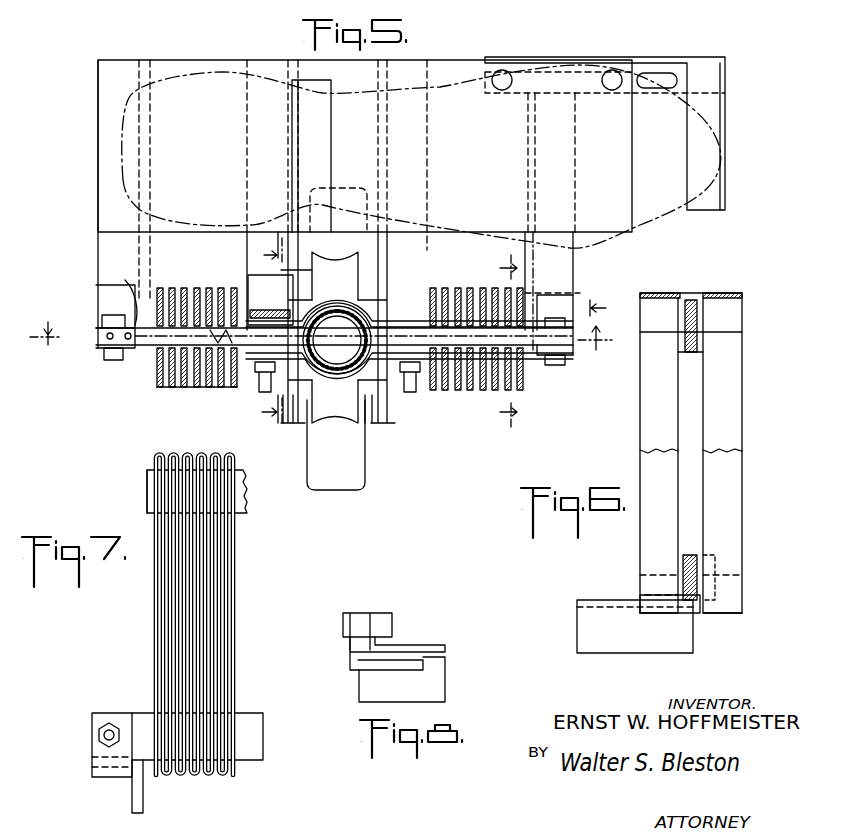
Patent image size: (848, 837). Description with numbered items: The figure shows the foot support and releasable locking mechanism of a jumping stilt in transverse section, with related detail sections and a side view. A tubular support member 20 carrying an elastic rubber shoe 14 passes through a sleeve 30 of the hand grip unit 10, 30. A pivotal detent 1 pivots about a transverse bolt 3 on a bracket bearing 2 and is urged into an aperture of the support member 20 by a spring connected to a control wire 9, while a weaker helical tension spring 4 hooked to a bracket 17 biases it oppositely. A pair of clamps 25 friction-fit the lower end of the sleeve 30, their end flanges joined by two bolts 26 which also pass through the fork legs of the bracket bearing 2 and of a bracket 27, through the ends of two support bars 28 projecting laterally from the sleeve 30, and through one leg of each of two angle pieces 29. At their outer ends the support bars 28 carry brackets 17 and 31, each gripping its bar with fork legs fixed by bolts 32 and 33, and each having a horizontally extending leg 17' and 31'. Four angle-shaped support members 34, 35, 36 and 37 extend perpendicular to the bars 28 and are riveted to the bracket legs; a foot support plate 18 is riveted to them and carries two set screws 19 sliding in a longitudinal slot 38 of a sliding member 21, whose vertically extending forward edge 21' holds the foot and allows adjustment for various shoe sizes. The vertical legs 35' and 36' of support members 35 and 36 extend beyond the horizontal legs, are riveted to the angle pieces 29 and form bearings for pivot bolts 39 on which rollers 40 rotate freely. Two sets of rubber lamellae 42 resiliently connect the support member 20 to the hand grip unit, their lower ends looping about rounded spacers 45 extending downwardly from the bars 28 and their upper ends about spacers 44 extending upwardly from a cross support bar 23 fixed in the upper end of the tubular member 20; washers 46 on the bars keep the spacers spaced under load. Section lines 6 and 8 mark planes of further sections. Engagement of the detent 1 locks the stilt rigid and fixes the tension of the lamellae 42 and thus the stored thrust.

In FIG. 5, the pivotal detent 1 is at (313, 338).
In FIG. 5, the bracket bearing 2 is at (250, 358).
In FIG. 5, the transverse bolt 3 is at (272, 310).
In FIG. 5, the helical tension spring 4 is at (208, 283).
In FIG. 5, the section line 6 is at (501, 344).
In FIG. 5, the section line 8 is at (604, 309).
In FIG. 5, the control wire 9 is at (321, 346).
In FIG. 5, the hand grip unit 10 is at (259, 333).
In FIG. 5, the elastic shoe 14 is at (355, 475).
In FIG. 5, the bracket 17 is at (98, 353).
In FIG. 7, the bracket 17 is at (84, 750).
In FIG. 5, the horizontally extending leg 17' is at (97, 306).
In FIG. 5, the foot support plate 18 is at (614, 197).
In FIG. 5, the set screws 19 is at (612, 72).
In FIG. 5, the tubular support member 20 is at (334, 370).
In FIG. 5, the sliding member 21 is at (605, 117).
In FIG. 5, the vertically extending forward edge 21' is at (746, 136).
In FIG. 7, the cross support bar 23 is at (240, 510).
In FIG. 5, the clamps 25 is at (365, 308).
In FIG. 5, the bolts 26 is at (334, 384).
In FIG. 5, the bracket 27 is at (410, 308).
In FIG. 5, the support bars 28 is at (572, 344).
In FIG. 6, the support bars 28 is at (692, 300).
In FIG. 7, the support bars 28 is at (263, 733).
In FIG. 5, the angle pieces 29 is at (283, 426).
In FIG. 5, the sleeve 30 is at (330, 310).
In FIG. 5, the bracket 31 is at (552, 371).
In FIG. 6, the bracket 31 is at (689, 624).
In FIG. 5, the horizontally extending leg 31' is at (582, 302).
In FIG. 6, the horizontally extending leg 31' is at (665, 577).
In FIG. 8, the horizontally extending leg 31' is at (384, 660).
In FIG. 5, the bolt 32 is at (113, 362).
In FIG. 7, the bolt 32 is at (109, 722).
In FIG. 5, the bolt 33 is at (566, 367).
In FIG. 8, the bolt 33 is at (395, 628).
In FIG. 5, the foot support plate support member 34 is at (100, 248).
In FIG. 7, the foot support plate support member 34 is at (132, 797).
In FIG. 5, the foot support plate support member 35 is at (284, 195).
In FIG. 5, the vertical leg 35' is at (293, 264).
In FIG. 5, the foot support plate support member 36 is at (409, 241).
In FIG. 5, the vertical leg 36' is at (381, 430).
In FIG. 5, the foot support plate support member 37 is at (565, 263).
In FIG. 6, the foot support plate support member 37 is at (620, 640).
In FIG. 8, the foot support plate support member 37 is at (430, 688).
In FIG. 5, the longitudinal slot 38 is at (655, 72).
In FIG. 5, the pivot bolts 39 is at (378, 278).
In FIG. 5, the rollers 40 is at (338, 262).
In FIG. 5, the resilient elements 42 is at (176, 288).
In FIG. 6, the resilient elements 42 is at (745, 472).
In FIG. 7, the resilient elements 42 is at (225, 612).
In FIG. 6, the rounded spacers 44 is at (745, 319).
In FIG. 7, the rounded spacers 44 is at (157, 462).
In FIG. 5, the rounded spacers 45 is at (160, 390).
In FIG. 6, the rounded spacers 45 is at (725, 594).
In FIG. 7, the rounded spacers 45 is at (217, 776).
In FIG. 5, the washers 46 is at (492, 385).